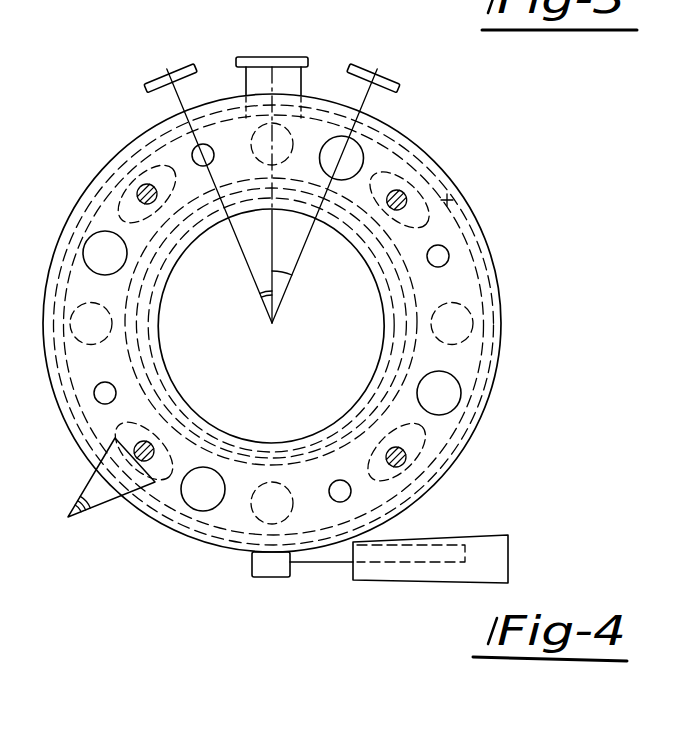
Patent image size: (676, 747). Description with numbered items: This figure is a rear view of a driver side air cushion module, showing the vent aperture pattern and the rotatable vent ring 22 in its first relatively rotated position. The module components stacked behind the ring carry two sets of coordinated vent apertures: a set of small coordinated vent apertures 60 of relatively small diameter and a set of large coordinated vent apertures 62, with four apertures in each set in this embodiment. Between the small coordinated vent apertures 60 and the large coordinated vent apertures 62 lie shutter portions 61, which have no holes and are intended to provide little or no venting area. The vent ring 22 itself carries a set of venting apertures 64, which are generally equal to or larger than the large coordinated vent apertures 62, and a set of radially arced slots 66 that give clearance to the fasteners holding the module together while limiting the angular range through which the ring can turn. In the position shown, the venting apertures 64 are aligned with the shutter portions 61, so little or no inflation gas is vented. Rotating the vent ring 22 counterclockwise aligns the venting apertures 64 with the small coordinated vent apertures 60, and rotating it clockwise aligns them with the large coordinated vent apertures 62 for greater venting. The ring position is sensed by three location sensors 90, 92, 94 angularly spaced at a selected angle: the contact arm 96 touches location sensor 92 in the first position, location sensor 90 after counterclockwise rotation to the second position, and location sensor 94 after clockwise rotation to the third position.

The vent ring 22 is at (453, 278).
The small coordinated vent apertures 60 is at (194, 147).
The shutter portions 61 is at (303, 137).
The large coordinated vent apertures 62 is at (350, 162).
The venting apertures 64 is at (236, 128).
The radially arced slots 66 is at (437, 204).
The location sensor 90 is at (154, 78).
The location sensor 92 is at (283, 62).
The location sensor 94 is at (374, 78).
The contact arm 96 is at (293, 80).